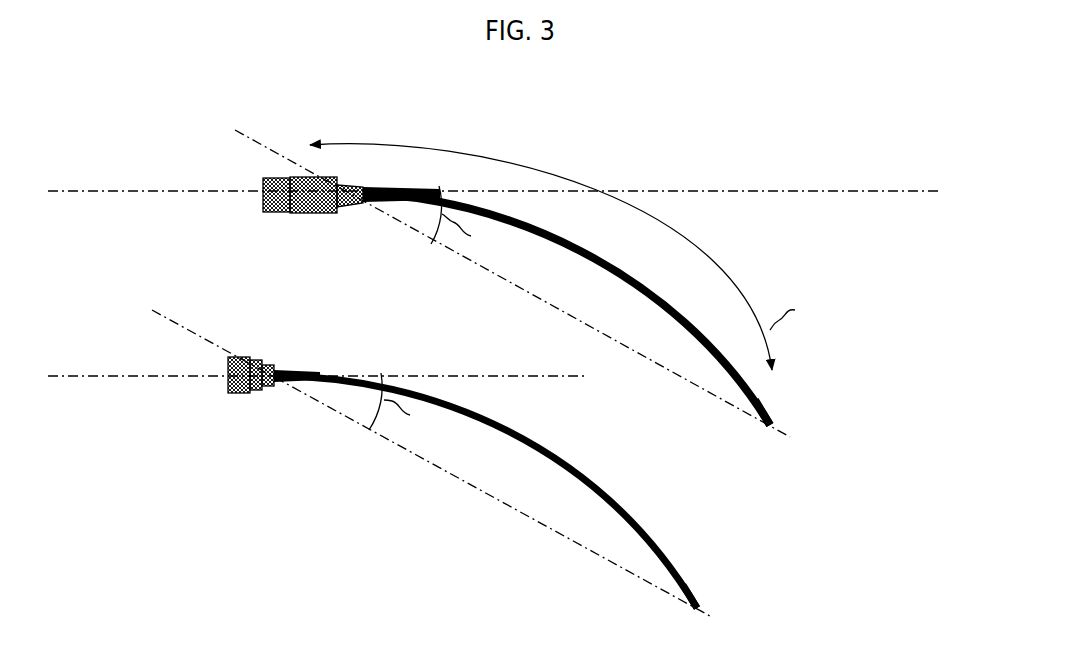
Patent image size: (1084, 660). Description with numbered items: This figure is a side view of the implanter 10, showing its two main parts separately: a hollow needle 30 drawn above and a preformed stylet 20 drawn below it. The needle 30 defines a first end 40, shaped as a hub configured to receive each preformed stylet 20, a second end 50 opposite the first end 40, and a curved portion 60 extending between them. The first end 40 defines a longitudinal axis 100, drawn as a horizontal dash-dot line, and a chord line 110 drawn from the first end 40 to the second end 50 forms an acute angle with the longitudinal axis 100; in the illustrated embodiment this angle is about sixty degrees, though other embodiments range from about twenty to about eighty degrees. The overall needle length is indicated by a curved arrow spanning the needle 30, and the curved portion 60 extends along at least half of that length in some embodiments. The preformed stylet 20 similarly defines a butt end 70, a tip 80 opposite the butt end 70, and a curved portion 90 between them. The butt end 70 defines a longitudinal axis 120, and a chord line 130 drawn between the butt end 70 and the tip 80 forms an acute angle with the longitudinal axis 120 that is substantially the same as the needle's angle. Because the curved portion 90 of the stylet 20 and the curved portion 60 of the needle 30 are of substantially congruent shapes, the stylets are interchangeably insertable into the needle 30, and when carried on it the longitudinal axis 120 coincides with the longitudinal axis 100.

The implanter 10 is at (240, 508).
The preformed stylet 20 is at (491, 475).
The hollow needle 30 is at (619, 162).
The first end 40 is at (337, 183).
The second end 50 is at (768, 414).
The curved portion 60 is at (580, 252).
The butt end 70 is at (274, 364).
The tip 80 is at (692, 598).
The curved portion 90 is at (508, 430).
The longitudinal axis 100 is at (674, 191).
The chord line 110 is at (252, 143).
The longitudinal axis 120 is at (443, 376).
The chord line 130 is at (172, 322).